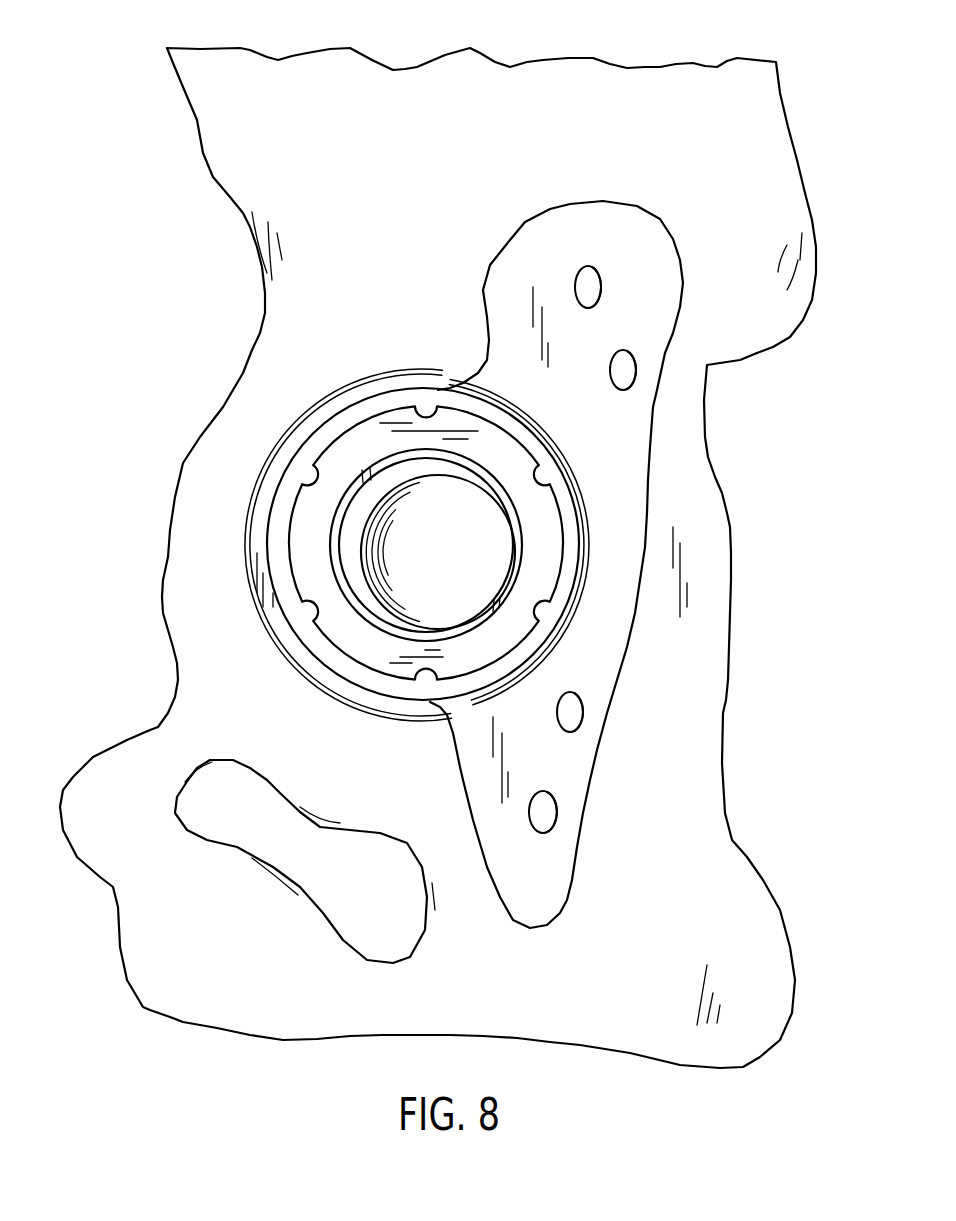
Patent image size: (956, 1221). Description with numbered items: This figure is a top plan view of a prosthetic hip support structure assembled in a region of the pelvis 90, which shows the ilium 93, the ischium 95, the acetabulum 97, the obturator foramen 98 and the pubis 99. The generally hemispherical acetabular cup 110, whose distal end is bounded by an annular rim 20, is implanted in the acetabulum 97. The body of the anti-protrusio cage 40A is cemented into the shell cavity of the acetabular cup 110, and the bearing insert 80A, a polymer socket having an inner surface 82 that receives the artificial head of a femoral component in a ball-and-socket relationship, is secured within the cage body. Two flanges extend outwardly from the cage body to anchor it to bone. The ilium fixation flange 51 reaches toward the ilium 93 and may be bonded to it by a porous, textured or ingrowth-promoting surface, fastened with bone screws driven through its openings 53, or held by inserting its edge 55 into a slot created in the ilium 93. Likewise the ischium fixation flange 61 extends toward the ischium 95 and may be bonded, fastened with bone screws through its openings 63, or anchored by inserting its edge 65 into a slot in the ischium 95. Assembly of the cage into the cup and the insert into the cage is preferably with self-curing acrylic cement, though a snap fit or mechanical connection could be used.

The annular rim 20 is at (368, 384).
The anti-protrusio cage 40A is at (470, 313).
The ilium fixation flange 51 is at (548, 233).
The openings 53 is at (643, 358).
The edge 55 is at (678, 252).
The ischium fixation flange 61 is at (518, 907).
The openings 63 is at (565, 817).
The edge 65 is at (567, 903).
The bearing insert 80A is at (545, 539).
The inner surface 82 is at (463, 596).
The pelvis 90 is at (545, 140).
The ilium 93 is at (667, 207).
The ischium 95 is at (687, 832).
The acetabulum 97 is at (248, 594).
The obturator foramen 98 is at (382, 928).
The pubis 99 is at (155, 774).
The acetabular cup 110 is at (310, 403).